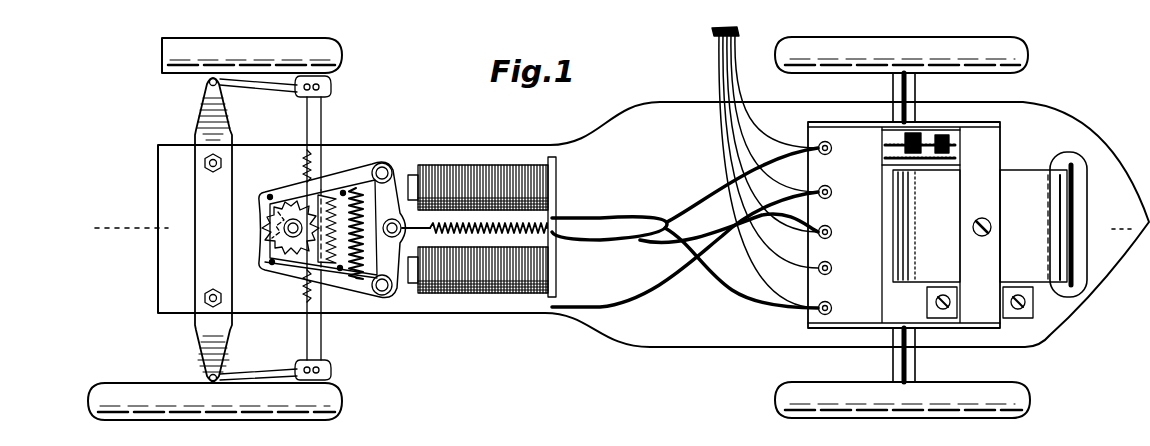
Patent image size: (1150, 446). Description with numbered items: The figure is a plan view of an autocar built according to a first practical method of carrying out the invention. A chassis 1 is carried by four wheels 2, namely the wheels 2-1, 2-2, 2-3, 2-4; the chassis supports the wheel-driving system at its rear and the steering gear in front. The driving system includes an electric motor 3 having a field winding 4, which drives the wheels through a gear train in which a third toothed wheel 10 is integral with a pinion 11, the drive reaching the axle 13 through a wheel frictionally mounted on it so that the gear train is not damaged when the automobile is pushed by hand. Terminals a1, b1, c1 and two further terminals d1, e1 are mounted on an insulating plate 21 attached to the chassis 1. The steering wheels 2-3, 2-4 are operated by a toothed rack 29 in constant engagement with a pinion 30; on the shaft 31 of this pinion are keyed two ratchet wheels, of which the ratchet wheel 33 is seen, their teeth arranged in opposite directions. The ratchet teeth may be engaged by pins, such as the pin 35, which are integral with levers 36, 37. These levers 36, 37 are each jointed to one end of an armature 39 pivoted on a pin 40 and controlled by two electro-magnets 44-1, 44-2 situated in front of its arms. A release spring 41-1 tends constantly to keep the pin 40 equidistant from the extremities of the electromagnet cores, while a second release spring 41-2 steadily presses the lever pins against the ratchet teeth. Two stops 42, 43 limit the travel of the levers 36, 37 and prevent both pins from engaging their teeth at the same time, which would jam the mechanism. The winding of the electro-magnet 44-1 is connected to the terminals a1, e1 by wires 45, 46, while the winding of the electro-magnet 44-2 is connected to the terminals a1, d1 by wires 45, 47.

The chassis 1 is at (661, 325).
The wheels 2 is at (96, 235).
The wheel 2-1 is at (790, 60).
The wheel 2-2 is at (870, 400).
The steering wheel 2-3 is at (338, 62).
The steering wheel 2-4 is at (290, 400).
The electric motor 3 is at (1033, 226).
The field winding 4 is at (1078, 190).
The third toothed wheel 10 is at (962, 137).
The pinion 11 is at (922, 140).
The axle 13 is at (915, 362).
The insulating plate 21 is at (920, 225).
The toothed rack 29 is at (313, 318).
The pinion 30 is at (301, 253).
The shaft 31 is at (288, 227).
The ratchet wheel 33 is at (276, 231).
The pin 35 is at (273, 196).
The lever 36 is at (347, 285).
The lever 37 is at (294, 200).
The armature 39 is at (393, 183).
The pin 40 is at (395, 228).
The release spring 41-1 is at (463, 224).
The second release spring 41-2 is at (362, 185).
The stop 42 is at (340, 270).
The stop 43 is at (340, 197).
The electro-magnet 44-1 is at (506, 180).
The electro-magnet 44-2 is at (472, 294).
The wire 45 is at (600, 214).
The wire 46 is at (700, 190).
The wire 47 is at (597, 305).
The terminal a1 is at (837, 309).
The terminal b1 is at (834, 280).
The terminal c1 is at (836, 233).
The terminal d1 is at (837, 186).
The terminal e1 is at (836, 151).